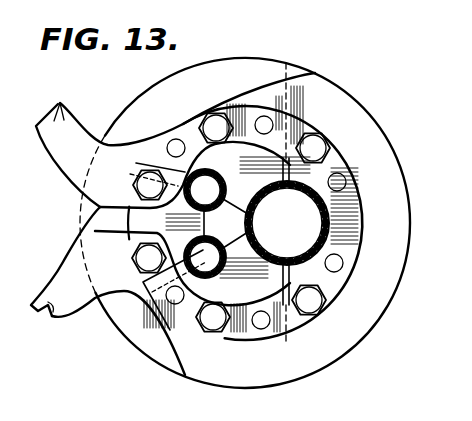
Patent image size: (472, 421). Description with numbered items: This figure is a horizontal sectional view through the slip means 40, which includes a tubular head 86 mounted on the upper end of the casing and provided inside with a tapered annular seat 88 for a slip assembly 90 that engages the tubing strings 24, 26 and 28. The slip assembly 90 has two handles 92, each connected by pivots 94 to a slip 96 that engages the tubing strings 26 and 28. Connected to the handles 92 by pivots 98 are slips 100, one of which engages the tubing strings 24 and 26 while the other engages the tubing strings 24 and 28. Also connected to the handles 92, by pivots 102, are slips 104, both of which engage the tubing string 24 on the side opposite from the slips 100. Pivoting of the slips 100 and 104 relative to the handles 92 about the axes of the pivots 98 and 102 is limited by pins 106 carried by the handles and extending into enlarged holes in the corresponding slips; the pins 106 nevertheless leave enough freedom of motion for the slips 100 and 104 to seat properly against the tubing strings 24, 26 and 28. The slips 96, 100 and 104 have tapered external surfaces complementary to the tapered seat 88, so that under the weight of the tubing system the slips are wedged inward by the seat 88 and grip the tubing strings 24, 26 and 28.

The slip means 40 is at (346, 90).
The tubular head 86 is at (340, 110).
The tubing string 24 is at (372, 195).
The tapered annular seat 88 is at (330, 244).
The slip assembly 90 is at (282, 104).
The handles 92 is at (37, 333).
The pivots 94 is at (100, 206).
The slip 96 is at (95, 231).
The pivots 98 is at (220, 110).
The slips 100 is at (258, 106).
The pivots 102 is at (318, 145).
The slips 104 is at (345, 212).
The pins 106 is at (170, 142).
The tubing string 26 is at (203, 167).
The tubing string 28 is at (195, 277).